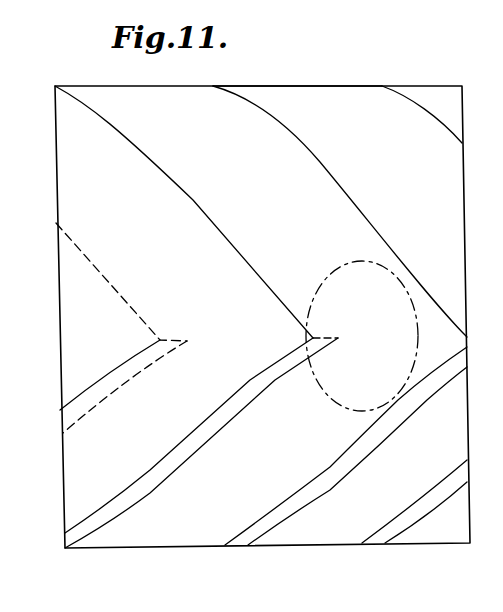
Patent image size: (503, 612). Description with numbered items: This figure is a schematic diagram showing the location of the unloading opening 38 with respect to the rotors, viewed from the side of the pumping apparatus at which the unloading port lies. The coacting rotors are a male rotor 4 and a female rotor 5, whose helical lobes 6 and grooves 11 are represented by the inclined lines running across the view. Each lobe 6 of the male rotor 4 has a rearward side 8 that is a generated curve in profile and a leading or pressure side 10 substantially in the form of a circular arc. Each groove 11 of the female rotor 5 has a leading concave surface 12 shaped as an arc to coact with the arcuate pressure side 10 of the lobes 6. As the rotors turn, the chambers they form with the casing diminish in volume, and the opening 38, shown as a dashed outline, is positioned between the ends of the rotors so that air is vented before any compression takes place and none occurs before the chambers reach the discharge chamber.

The male rotor 4 is at (408, 100).
The female rotor 5 is at (277, 518).
The helically arranged lobes 6 is at (250, 100).
The rearward sides of the lobes 8 is at (117, 140).
The leading or pressure side of the lobe 10 is at (302, 122).
The helically arranged grooves 11 is at (255, 515).
The leading concave surfaces of the grooves 12 is at (343, 500).
The opening 38 is at (405, 318).